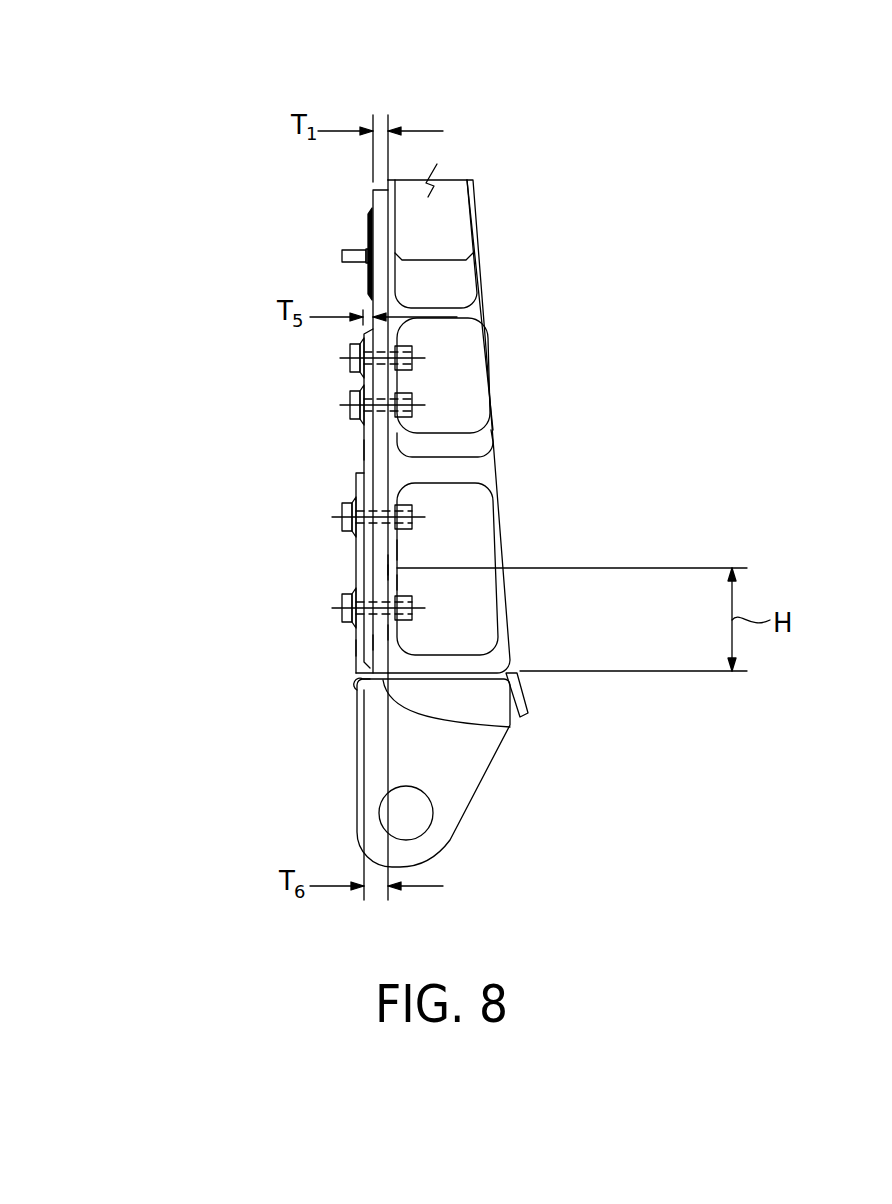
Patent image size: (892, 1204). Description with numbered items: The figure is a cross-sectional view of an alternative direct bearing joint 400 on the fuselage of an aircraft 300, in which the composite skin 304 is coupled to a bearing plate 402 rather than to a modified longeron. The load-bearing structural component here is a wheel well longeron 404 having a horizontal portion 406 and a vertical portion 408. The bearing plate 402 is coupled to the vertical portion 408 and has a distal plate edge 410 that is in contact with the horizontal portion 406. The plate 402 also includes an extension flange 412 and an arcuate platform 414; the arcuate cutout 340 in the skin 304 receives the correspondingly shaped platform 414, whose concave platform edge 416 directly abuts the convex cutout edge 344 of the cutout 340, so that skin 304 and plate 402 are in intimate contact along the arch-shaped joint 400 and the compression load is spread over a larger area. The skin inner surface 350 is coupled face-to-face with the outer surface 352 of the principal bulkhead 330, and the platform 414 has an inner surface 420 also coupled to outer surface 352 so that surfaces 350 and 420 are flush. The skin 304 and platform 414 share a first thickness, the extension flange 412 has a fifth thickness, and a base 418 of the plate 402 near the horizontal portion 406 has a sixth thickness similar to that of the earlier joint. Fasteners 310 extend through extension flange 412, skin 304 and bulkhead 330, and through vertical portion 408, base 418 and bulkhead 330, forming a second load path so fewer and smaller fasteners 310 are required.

The aircraft 300 is at (128, 220).
The composite skin 304 is at (378, 223).
The principal bulkhead 330 is at (490, 237).
The skin inner surface 350 is at (387, 290).
The fasteners 310 is at (355, 405).
The outer surface of bulkhead 352 is at (392, 452).
The extension flange 412 is at (368, 450).
The arcuate cutout 340 is at (372, 560).
The direct bearing joint 400 is at (408, 542).
The cutout edge 344 is at (393, 566).
The platform edge 416 is at (385, 570).
The platform inner surface 420 is at (393, 582).
The bearing plate 402 is at (378, 633).
The arcuate platform 414 is at (378, 642).
The vertical portion 408 is at (357, 648).
The base 418 is at (358, 682).
The horizontal portion 406 is at (495, 660).
The wheel well longeron 404 is at (524, 696).
The distal plate edge 410 is at (478, 724).